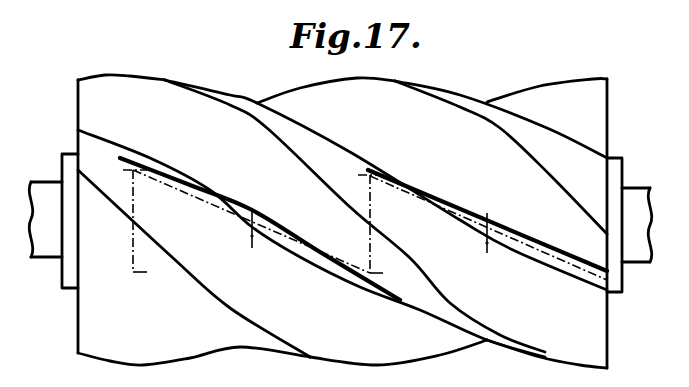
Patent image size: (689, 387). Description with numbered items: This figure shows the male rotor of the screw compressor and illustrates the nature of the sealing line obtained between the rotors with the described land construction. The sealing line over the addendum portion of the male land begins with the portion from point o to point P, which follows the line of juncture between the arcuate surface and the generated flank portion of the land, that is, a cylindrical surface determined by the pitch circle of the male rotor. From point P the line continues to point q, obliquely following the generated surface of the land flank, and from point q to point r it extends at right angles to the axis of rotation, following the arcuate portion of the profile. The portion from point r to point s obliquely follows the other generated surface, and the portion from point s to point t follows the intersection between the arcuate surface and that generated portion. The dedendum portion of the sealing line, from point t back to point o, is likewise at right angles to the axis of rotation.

The sealing line point q is at (244, 219).
The sealing line point r is at (261, 273).
The sealing line point p P is at (241, 225).
The sealing line point t is at (252, 210).
The sealing line point s is at (276, 204).
The sealing line point o is at (368, 250).